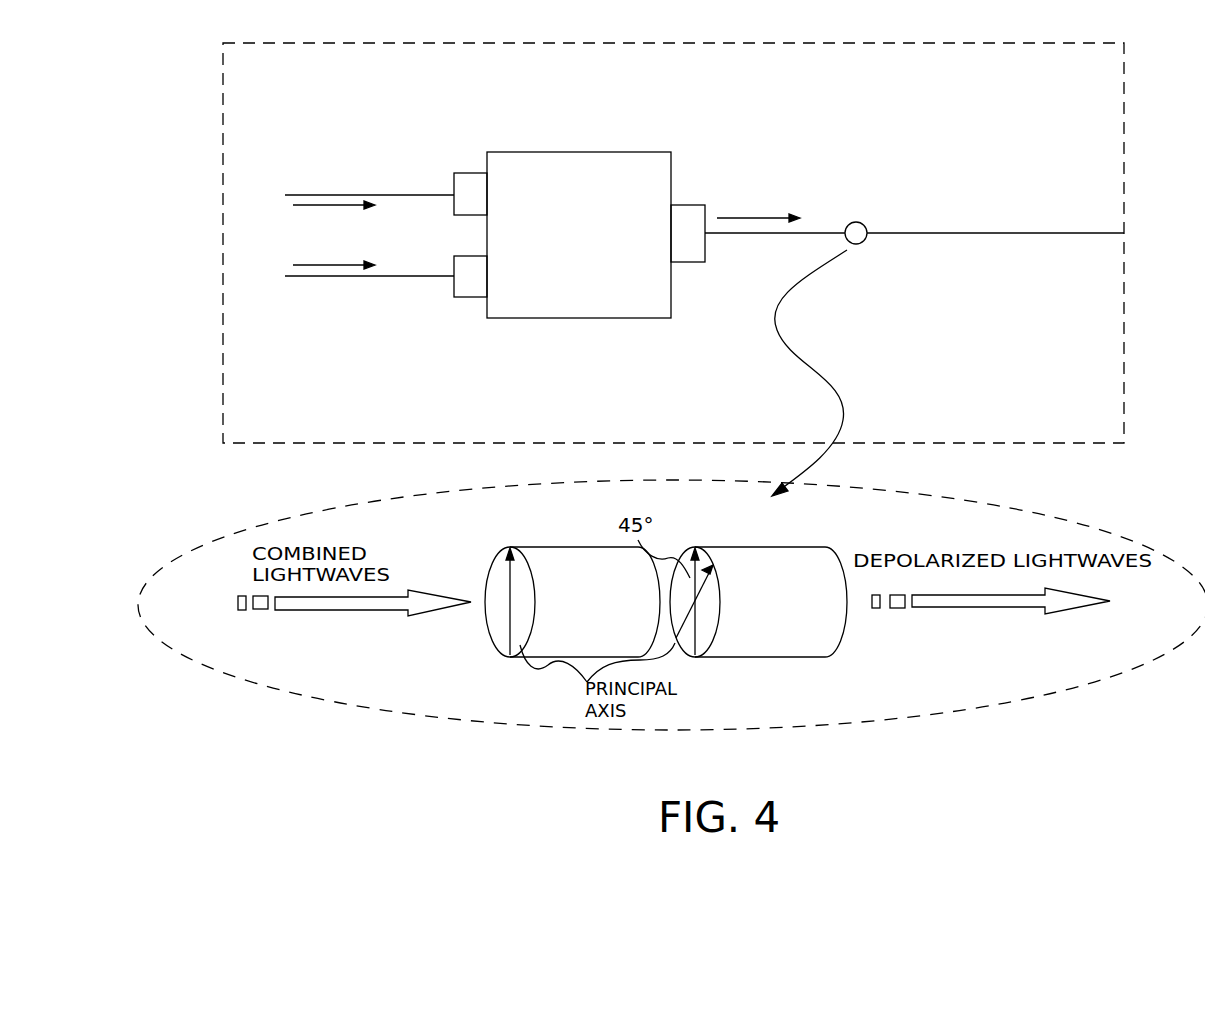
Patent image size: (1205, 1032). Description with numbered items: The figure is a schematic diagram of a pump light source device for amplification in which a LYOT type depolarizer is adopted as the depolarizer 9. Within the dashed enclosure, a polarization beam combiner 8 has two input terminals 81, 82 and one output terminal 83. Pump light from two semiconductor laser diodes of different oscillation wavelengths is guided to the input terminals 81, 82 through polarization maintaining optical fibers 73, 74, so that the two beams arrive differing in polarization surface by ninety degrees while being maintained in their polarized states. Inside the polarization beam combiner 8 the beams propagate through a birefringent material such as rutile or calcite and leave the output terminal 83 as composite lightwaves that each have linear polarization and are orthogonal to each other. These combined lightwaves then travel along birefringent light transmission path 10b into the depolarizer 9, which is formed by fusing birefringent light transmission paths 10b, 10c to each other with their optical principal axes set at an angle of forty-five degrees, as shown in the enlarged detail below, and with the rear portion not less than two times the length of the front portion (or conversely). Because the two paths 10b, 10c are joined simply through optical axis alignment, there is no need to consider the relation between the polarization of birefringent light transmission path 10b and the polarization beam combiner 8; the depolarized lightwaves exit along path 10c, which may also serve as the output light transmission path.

The polarization maintaining optical fiber 73 is at (368, 195).
The polarization maintaining optical fiber 74 is at (367, 277).
The polarization beam combiner 8 is at (580, 297).
The input terminal 81 is at (470, 195).
The input terminal 82 is at (470, 278).
The output terminal 83 is at (687, 233).
The depolarizer 9 is at (928, 233).
The birefringent light transmission path 10b is at (817, 233).
The birefringent light transmission path 10c is at (957, 233).